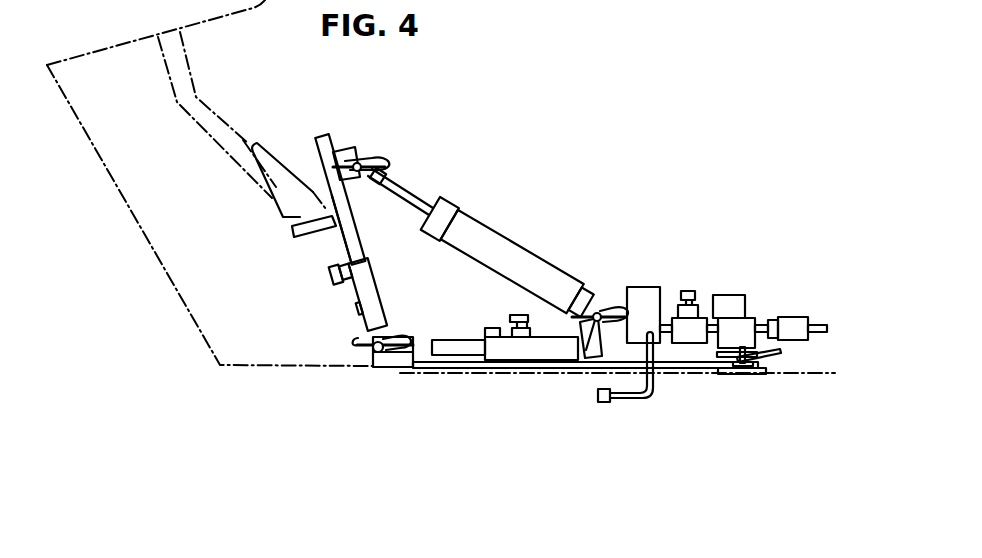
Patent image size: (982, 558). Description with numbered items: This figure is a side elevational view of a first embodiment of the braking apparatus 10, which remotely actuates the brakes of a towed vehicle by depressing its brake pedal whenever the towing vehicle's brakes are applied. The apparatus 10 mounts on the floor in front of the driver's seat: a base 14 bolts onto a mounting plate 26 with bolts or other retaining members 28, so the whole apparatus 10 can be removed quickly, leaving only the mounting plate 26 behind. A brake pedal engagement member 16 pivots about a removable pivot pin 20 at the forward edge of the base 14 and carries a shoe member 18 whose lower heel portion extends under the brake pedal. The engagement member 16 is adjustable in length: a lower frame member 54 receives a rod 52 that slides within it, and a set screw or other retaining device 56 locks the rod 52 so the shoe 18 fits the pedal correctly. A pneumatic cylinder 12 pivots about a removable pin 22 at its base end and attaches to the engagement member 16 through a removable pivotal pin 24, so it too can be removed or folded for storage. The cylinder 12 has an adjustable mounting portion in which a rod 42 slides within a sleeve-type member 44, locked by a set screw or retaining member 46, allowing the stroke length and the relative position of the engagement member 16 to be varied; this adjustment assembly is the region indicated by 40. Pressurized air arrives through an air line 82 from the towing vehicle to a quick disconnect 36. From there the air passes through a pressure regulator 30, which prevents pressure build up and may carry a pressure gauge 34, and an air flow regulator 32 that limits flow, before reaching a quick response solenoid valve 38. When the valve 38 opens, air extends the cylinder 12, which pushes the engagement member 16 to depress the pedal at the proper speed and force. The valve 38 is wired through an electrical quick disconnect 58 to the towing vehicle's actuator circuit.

The braking apparatus 10 is at (499, 185).
The pneumatic cylinder 12 is at (513, 247).
The base 14 is at (488, 363).
The brake pedal engagement member 16 is at (330, 135).
The shoe member 18 is at (293, 236).
The pivot pin 20 is at (372, 352).
The removable pin 22 is at (587, 357).
The removable pivotal pin 24 is at (362, 160).
The mounting plate 26 is at (760, 373).
The retaining members 28 is at (781, 352).
The pressure regulator 30 is at (752, 320).
The air flow regulator 32 is at (688, 291).
The pressure gauge 34 is at (734, 295).
The quick disconnect 36 is at (797, 322).
The valve 38 is at (640, 287).
The hand pump 40 is at (526, 382).
The rod 42 is at (445, 340).
The sleeve-type member 44 is at (517, 357).
The retaining member 46 is at (513, 317).
The rod 52 is at (351, 234).
The lower frame member 54 is at (365, 318).
The retaining device 56 is at (326, 279).
The quick disconnect 58 is at (603, 403).
The air line 82 is at (818, 330).